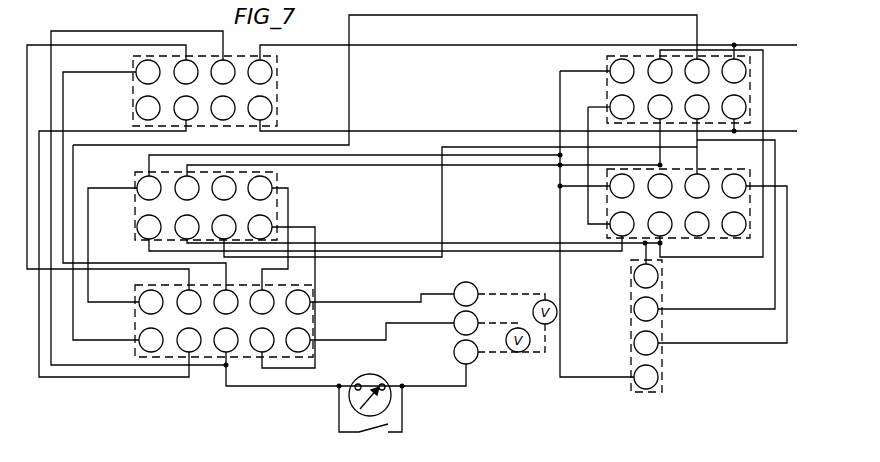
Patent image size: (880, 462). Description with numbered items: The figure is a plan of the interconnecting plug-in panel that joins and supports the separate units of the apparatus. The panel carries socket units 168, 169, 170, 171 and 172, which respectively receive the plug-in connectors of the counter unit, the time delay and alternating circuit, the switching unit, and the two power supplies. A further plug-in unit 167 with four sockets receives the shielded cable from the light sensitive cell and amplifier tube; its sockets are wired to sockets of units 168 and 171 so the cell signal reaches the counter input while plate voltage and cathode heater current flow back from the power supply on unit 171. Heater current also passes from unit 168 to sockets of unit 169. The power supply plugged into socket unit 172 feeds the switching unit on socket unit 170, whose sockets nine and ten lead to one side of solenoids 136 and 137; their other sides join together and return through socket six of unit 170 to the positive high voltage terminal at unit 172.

The socket unit 172 is at (283, 88).
The socket unit 171 is at (607, 62).
The socket unit 169 is at (135, 180).
The socket unit 168 is at (704, 169).
The socket unit 170 is at (135, 326).
The plug-in unit 167 is at (662, 356).
The solenoid 136 is at (473, 288).
The solenoid 137 is at (457, 345).